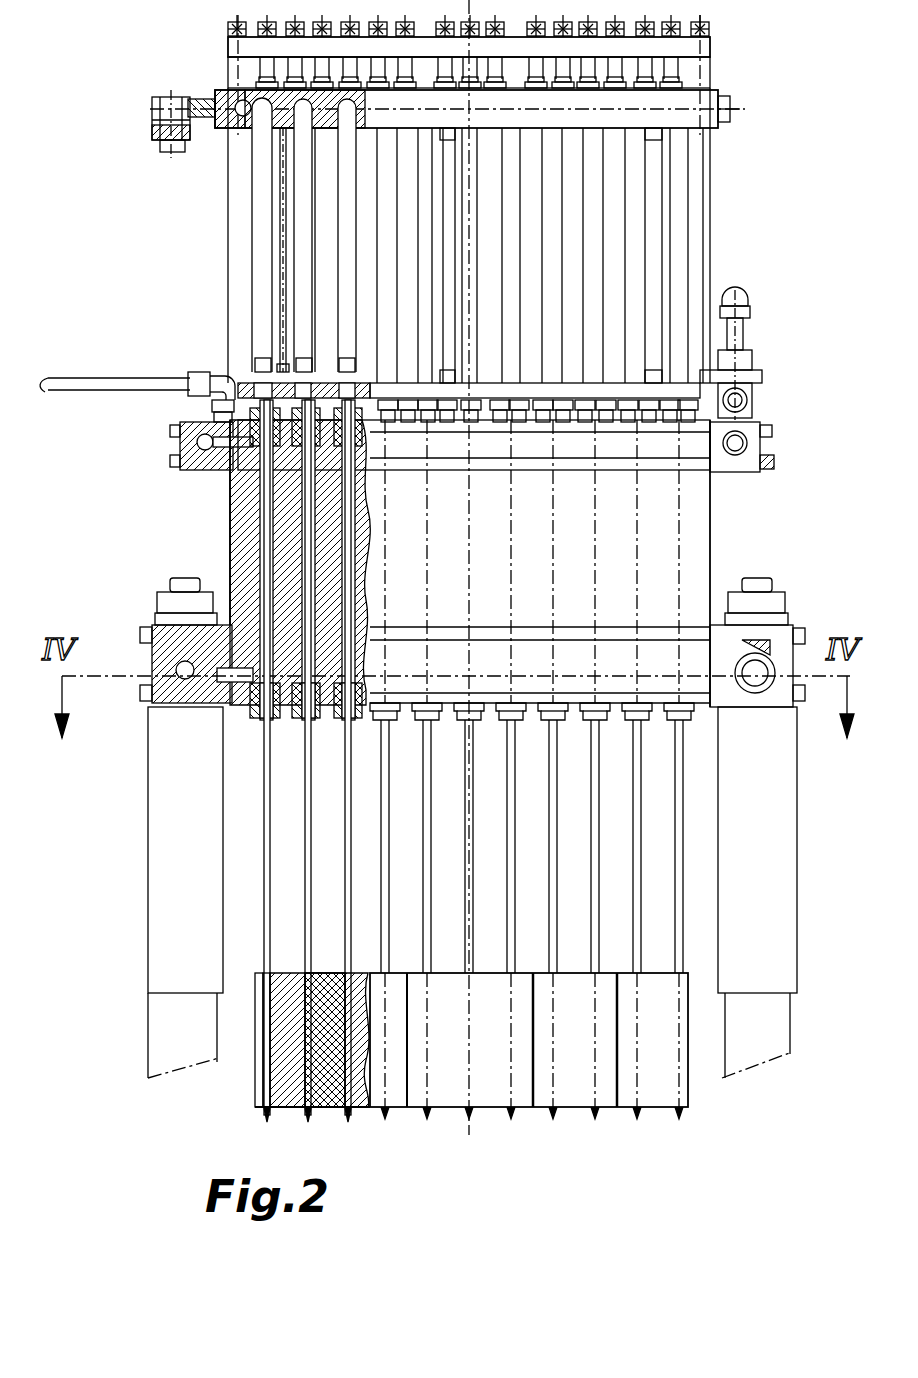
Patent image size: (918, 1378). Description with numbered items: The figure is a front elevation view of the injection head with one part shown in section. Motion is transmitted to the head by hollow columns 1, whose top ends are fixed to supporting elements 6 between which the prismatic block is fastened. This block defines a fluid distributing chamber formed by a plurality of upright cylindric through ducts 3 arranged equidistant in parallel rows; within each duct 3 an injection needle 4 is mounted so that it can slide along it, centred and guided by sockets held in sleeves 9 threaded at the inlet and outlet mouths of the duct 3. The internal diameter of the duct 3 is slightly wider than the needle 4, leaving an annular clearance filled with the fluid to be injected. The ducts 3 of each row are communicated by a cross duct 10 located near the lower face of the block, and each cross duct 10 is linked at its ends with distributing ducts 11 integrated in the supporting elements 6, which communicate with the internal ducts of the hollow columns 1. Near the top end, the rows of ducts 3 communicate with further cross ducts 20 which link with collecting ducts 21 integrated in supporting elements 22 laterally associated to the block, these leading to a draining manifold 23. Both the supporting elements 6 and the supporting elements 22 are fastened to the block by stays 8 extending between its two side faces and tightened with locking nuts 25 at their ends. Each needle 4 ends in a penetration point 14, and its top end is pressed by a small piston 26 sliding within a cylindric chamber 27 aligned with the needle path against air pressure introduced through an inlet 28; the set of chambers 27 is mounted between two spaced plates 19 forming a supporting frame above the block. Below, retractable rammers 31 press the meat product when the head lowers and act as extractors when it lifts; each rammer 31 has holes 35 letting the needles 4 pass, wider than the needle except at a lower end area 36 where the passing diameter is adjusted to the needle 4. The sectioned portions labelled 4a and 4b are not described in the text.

The hollow column 1 is at (162, 1026).
The upright cylindric through duct 3 is at (260, 535).
The injection needle 4 is at (263, 863).
The upper plate section 4a is at (245, 552).
The lower plate 4b is at (257, 997).
The supporting element 6 is at (150, 640).
The stay 8 is at (746, 470).
The sleeve 9 is at (252, 714).
The cross duct 10 is at (290, 714).
The distributing duct 11 is at (172, 675).
The penetration point 14 is at (263, 1108).
The plate 19 is at (700, 122).
The cross duct 20 is at (283, 462).
The collecting duct 21 is at (180, 440).
The supporting element 22 is at (180, 462).
The draining manifold 23 is at (100, 378).
The locking nut 25 is at (758, 455).
The small piston 26 is at (256, 385).
The cylindric chamber 27 is at (262, 240).
The inlet 28 is at (152, 112).
The retractable rammer 31 is at (493, 1097).
The hole 35 is at (258, 1043).
The lower end area 36 is at (258, 1098).